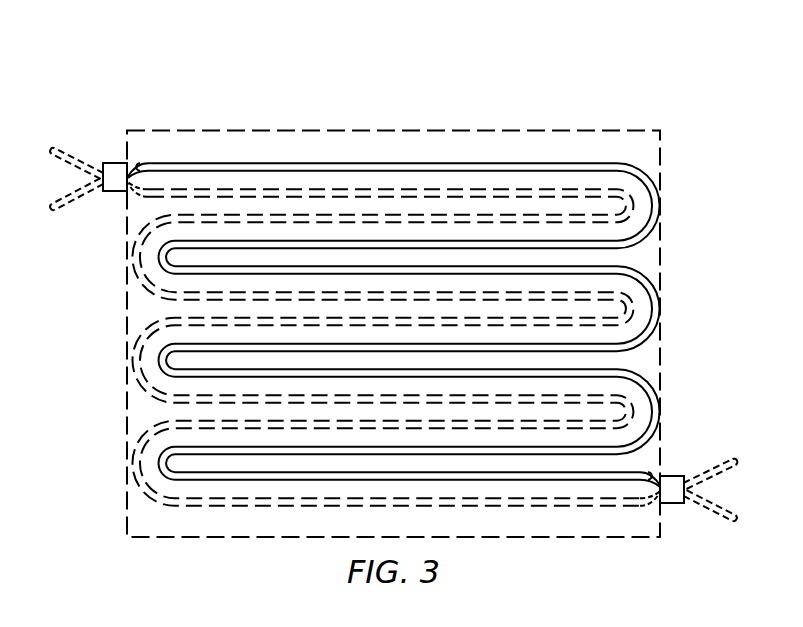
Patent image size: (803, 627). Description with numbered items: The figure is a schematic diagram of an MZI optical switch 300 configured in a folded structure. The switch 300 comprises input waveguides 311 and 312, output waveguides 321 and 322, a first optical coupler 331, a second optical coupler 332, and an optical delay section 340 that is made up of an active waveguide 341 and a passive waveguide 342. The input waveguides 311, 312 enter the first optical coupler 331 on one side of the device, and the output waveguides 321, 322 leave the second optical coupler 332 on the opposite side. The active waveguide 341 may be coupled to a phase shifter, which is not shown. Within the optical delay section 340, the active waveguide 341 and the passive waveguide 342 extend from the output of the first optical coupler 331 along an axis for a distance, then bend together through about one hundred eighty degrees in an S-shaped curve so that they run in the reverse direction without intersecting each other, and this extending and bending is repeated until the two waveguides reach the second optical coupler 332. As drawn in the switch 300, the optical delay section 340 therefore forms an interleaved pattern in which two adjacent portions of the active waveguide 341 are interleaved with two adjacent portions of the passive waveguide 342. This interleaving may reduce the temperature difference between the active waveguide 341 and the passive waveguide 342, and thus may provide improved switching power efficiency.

The MZI optical switch 300 is at (103, 48).
The input waveguide 311 is at (72, 160).
The input waveguide 312 is at (70, 205).
The output waveguide 321 is at (722, 460).
The output waveguide 322 is at (720, 519).
The first optical coupler 331 is at (112, 191).
The second optical coupler 332 is at (675, 503).
The optical delay section 340 is at (395, 130).
The active waveguide 341 is at (507, 161).
The passive waveguide 342 is at (248, 188).